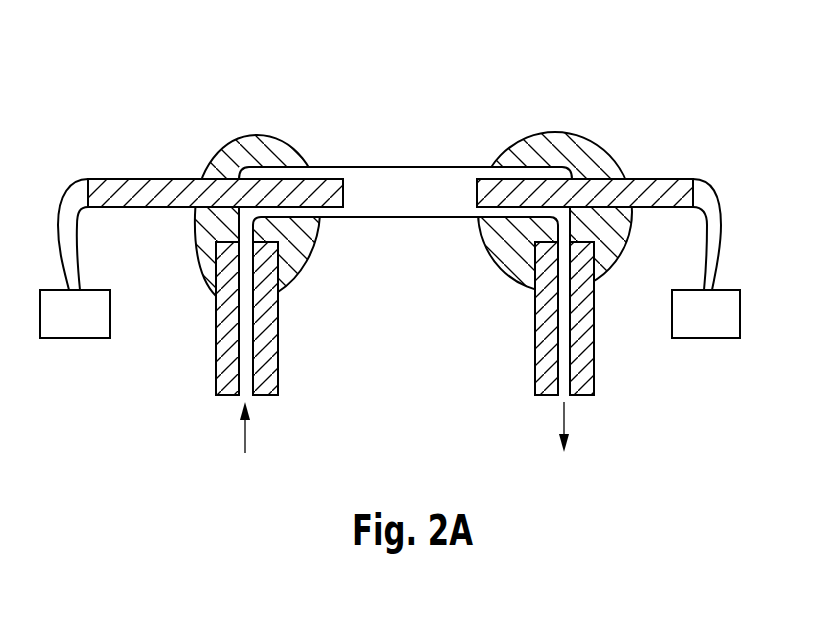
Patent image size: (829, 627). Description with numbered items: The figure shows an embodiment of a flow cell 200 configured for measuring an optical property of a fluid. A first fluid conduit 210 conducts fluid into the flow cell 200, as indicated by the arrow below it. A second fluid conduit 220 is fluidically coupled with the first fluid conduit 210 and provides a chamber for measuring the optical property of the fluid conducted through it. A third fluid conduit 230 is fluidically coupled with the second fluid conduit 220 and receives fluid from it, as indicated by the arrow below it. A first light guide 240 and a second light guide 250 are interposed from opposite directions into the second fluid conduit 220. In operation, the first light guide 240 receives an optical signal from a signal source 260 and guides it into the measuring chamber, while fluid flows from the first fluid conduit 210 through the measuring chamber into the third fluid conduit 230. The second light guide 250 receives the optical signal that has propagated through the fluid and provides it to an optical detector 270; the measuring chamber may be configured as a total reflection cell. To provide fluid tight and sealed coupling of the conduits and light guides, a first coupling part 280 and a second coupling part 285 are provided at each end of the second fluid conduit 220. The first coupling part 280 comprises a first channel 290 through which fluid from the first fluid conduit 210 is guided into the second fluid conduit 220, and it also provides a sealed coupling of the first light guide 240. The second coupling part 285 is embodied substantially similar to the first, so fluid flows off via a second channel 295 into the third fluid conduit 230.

The flow cell 200 is at (641, 68).
The first fluid conduit 210 is at (273, 342).
The second fluid conduit 220 is at (412, 180).
The third fluid conduit 230 is at (585, 360).
The first light guide 240 is at (155, 185).
The second light guide 250 is at (660, 184).
The signal source 260 is at (78, 330).
The optical detector 270 is at (708, 332).
The first coupling part 280 is at (263, 143).
The second coupling part 285 is at (523, 143).
The first channel 290 is at (245, 218).
The second channel 295 is at (555, 222).